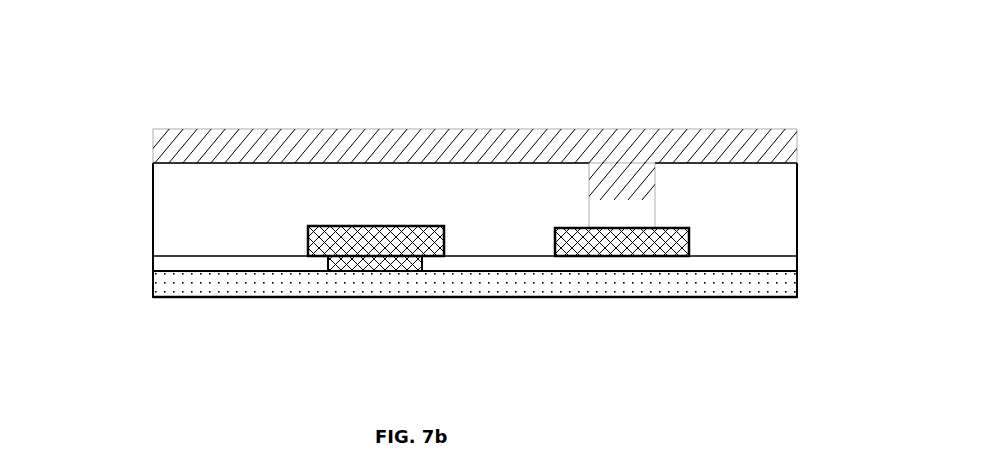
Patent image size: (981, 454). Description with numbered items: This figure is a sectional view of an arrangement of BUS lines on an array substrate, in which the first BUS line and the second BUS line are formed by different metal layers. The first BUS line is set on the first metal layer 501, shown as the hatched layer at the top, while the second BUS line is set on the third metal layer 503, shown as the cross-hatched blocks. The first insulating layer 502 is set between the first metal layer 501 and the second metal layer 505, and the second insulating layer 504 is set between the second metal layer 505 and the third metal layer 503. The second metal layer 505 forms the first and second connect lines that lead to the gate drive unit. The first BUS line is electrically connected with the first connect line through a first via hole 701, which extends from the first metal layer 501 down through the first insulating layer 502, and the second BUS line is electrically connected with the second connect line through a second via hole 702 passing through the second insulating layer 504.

The first metal layer 501 is at (166, 150).
The first insulating layer 502 is at (182, 209).
The third metal layer 503 is at (308, 244).
The second insulating layer 504 is at (180, 263).
The second metal layer 505 is at (483, 283).
The first via hole 701 is at (650, 196).
The second via hole 702 is at (362, 270).